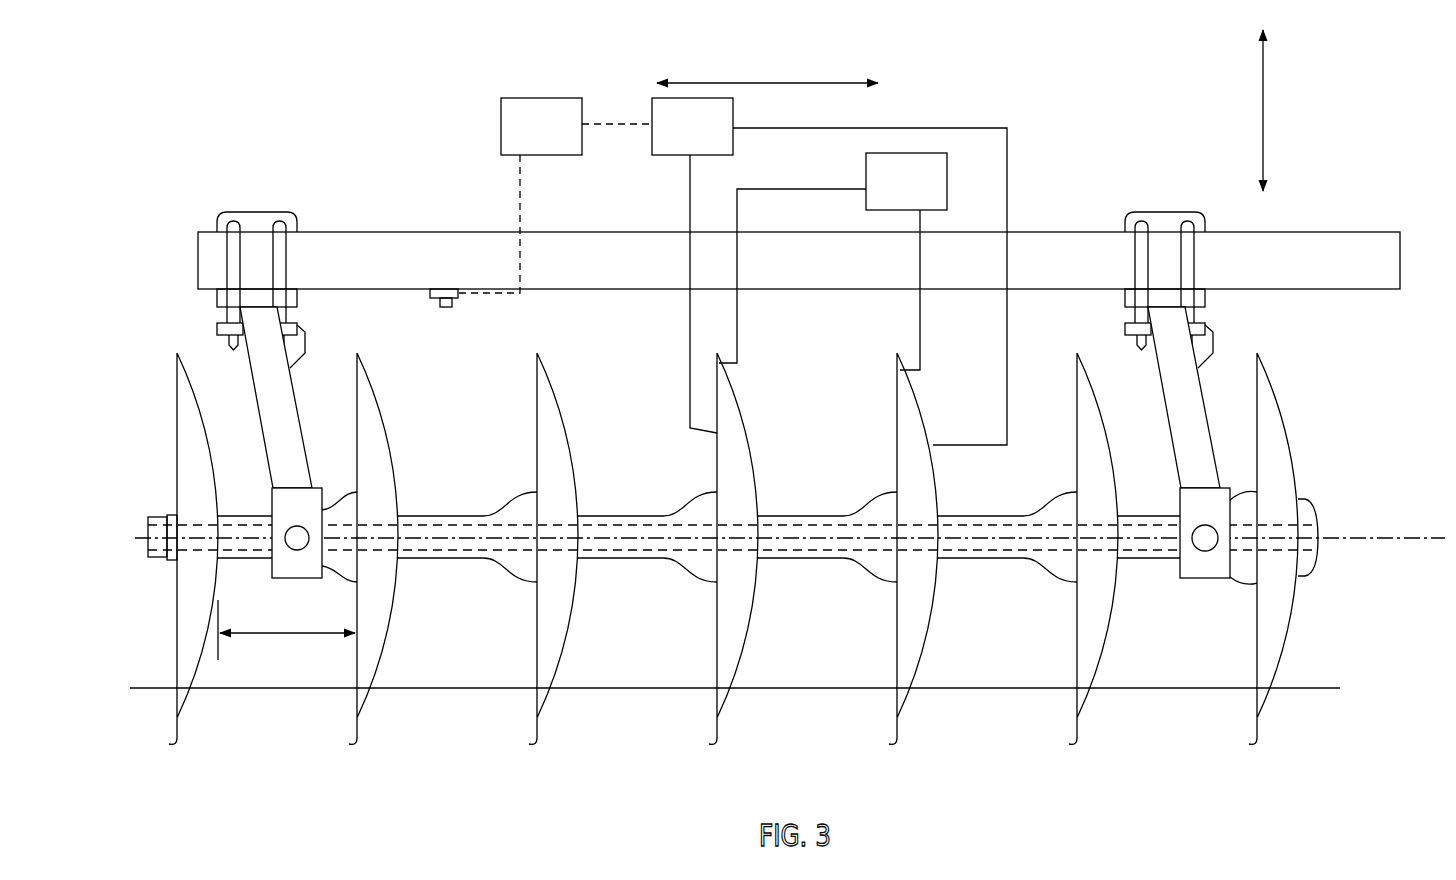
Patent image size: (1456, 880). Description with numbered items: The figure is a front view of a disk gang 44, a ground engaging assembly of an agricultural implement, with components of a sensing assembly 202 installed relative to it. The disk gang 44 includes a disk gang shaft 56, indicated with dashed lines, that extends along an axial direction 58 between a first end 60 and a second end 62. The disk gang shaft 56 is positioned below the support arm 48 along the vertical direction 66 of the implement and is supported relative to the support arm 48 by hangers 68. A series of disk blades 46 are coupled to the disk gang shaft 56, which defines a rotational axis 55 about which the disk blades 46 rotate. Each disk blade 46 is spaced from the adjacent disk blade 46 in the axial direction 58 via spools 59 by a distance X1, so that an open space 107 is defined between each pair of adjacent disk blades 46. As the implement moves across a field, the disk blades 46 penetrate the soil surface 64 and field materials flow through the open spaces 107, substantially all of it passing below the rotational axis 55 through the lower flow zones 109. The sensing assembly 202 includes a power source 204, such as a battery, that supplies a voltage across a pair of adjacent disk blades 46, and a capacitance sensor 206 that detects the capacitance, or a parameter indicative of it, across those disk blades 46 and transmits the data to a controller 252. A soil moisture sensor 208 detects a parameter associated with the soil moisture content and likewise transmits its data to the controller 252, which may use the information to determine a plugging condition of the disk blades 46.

The disk gang 44 is at (208, 179).
The disk blade 46 is at (167, 744).
The support arm 48 is at (612, 231).
The rotational axis 55 is at (1400, 540).
The disk gang shaft 56 is at (1147, 552).
The axial direction 58 is at (755, 82).
The spool 59 is at (467, 560).
The first end 60 is at (105, 522).
The second end 62 is at (1332, 519).
The soil surface 64 is at (1340, 688).
The vertical direction 66 is at (1264, 115).
The hanger 68 is at (262, 385).
The open space 107 is at (724, 565).
The lower flow zone 109 is at (453, 645).
The sensing assembly 202 is at (1044, 114).
The power source 204 is at (887, 192).
The capacitance sensor 206 is at (673, 137).
The soil moisture sensor 208 is at (444, 288).
The controller 252 is at (522, 137).
The distance X1 is at (270, 636).